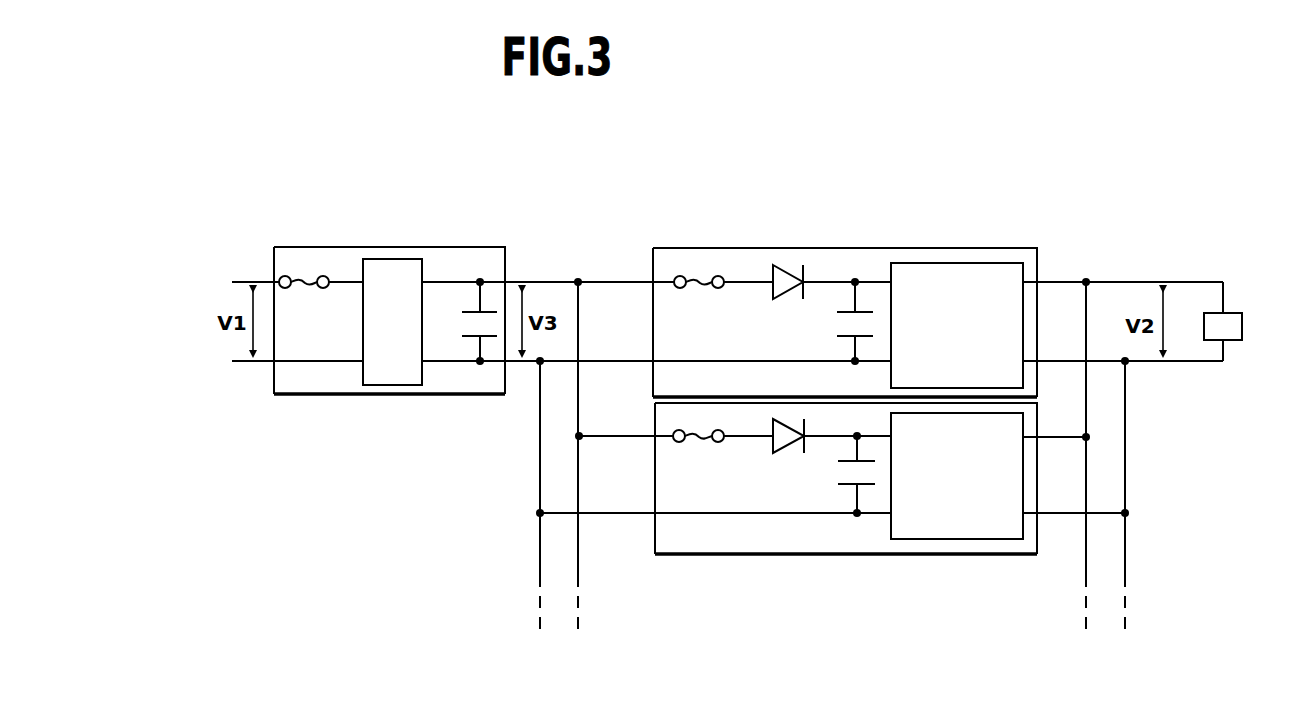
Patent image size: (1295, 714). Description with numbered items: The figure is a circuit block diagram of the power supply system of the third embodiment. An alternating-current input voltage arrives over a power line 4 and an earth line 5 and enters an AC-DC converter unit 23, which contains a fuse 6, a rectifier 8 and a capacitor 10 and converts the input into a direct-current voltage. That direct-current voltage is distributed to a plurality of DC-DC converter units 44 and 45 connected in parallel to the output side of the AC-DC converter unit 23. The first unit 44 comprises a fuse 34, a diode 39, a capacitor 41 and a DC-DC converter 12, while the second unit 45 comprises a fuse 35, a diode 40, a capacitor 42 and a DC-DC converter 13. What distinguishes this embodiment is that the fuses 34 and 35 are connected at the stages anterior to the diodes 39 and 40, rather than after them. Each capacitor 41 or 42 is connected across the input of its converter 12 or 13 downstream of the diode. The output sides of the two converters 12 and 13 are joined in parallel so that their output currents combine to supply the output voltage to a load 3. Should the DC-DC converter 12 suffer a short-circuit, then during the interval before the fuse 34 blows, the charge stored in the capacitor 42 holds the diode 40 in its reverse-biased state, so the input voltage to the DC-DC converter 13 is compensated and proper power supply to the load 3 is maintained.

The load 3 is at (1228, 340).
The power line 4 is at (239, 282).
The earth line 5 is at (236, 361).
The fuse 6 is at (304, 282).
The rectifier 8 is at (393, 385).
The capacitor 10 is at (475, 336).
The DC-DC converter 12 is at (960, 263).
The DC-DC converter 13 is at (958, 539).
The AC-DC converter unit 23 is at (450, 247).
The fuse 34 is at (693, 278).
The fuse 35 is at (699, 440).
The diode 39 is at (786, 268).
The diode 40 is at (786, 450).
The capacitor 41 is at (840, 313).
The capacitor 42 is at (840, 486).
The DC-DC converter unit 44 is at (673, 248).
The DC-DC converter unit 45 is at (712, 554).